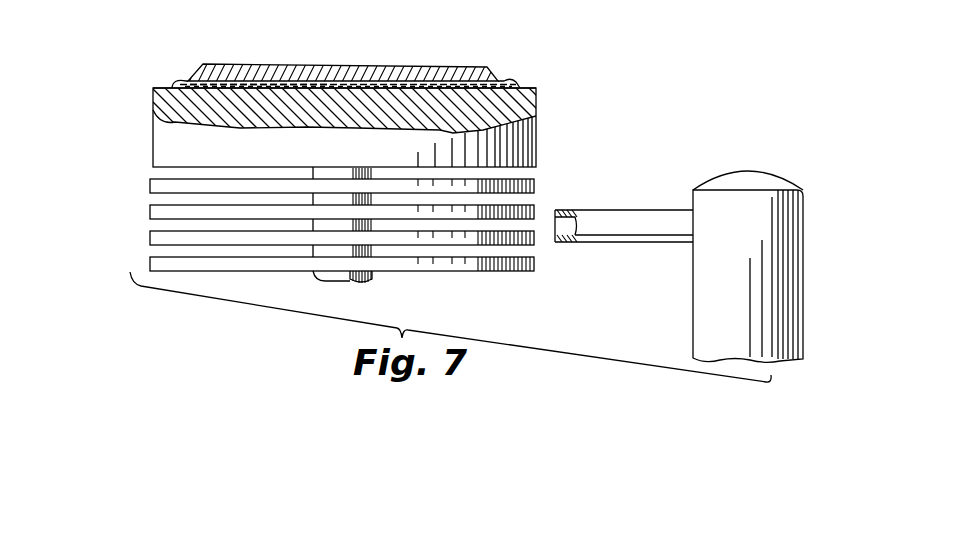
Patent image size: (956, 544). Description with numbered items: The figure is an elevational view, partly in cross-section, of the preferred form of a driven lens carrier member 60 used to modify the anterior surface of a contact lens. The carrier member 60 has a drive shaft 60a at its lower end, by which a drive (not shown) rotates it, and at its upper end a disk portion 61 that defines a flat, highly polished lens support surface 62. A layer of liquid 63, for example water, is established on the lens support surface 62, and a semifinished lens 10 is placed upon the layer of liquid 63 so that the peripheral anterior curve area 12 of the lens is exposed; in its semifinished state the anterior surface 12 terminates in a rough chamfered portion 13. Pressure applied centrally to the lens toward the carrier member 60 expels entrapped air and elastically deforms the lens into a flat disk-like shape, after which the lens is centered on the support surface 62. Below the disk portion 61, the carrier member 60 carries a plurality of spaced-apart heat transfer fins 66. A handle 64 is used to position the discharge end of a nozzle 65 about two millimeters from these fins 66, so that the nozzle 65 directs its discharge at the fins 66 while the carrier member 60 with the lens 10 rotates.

The semifinished lens 10 is at (307, 58).
The anterior surface 12 is at (432, 66).
The chamfered portion 13 is at (493, 70).
The driven lens carrier member 60 is at (138, 203).
The drive shaft 60a is at (363, 282).
The disk portion 61 is at (536, 137).
The lens support surface 62 is at (531, 89).
The layer of liquid 63 is at (333, 86).
The handle 64 is at (805, 205).
The nozzle 65 is at (645, 210).
The heat transfer fins 66 is at (533, 213).